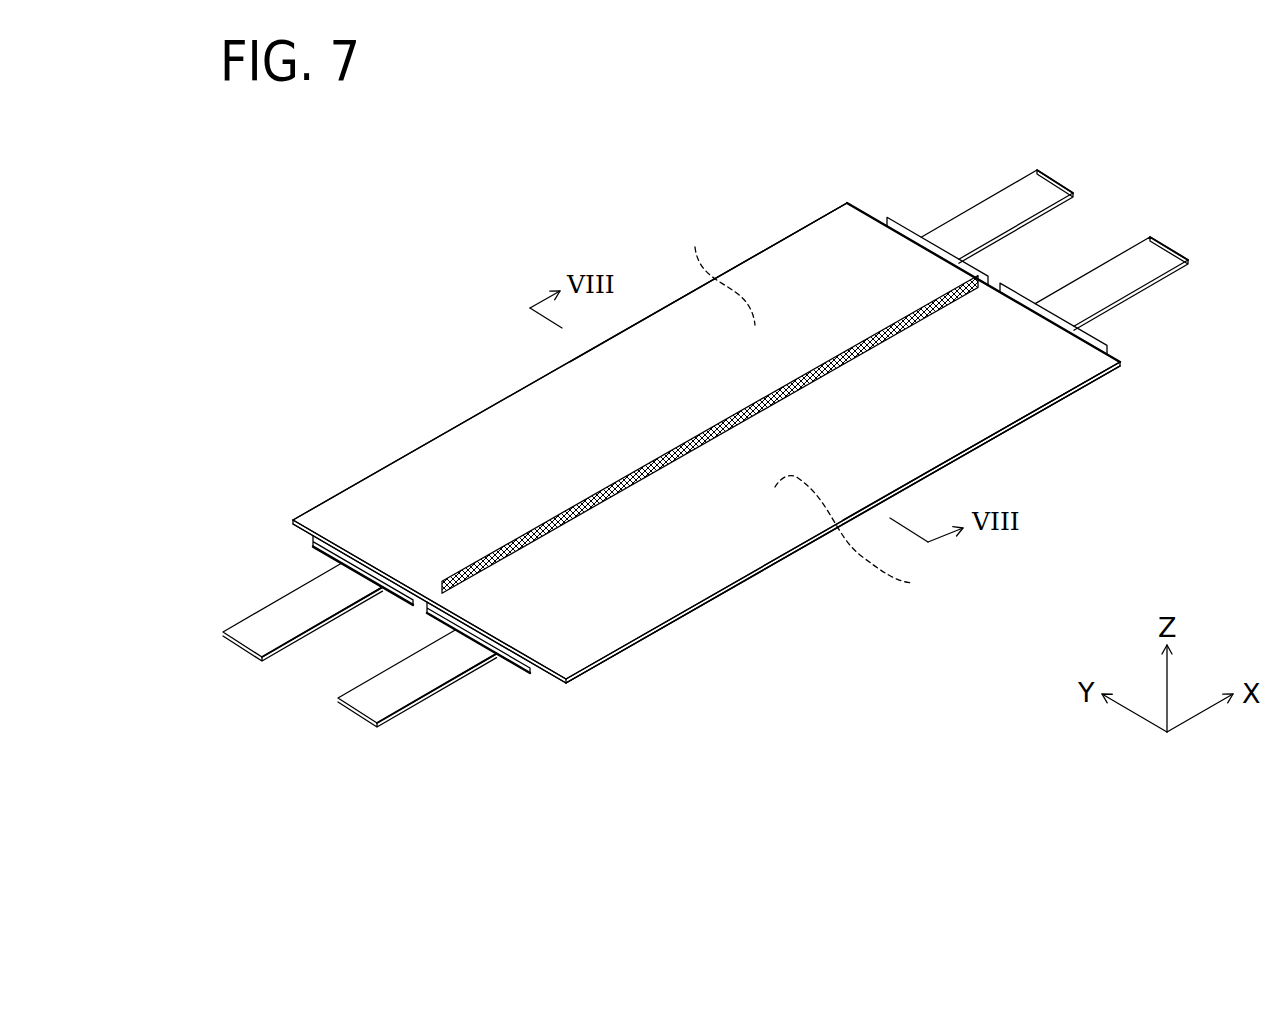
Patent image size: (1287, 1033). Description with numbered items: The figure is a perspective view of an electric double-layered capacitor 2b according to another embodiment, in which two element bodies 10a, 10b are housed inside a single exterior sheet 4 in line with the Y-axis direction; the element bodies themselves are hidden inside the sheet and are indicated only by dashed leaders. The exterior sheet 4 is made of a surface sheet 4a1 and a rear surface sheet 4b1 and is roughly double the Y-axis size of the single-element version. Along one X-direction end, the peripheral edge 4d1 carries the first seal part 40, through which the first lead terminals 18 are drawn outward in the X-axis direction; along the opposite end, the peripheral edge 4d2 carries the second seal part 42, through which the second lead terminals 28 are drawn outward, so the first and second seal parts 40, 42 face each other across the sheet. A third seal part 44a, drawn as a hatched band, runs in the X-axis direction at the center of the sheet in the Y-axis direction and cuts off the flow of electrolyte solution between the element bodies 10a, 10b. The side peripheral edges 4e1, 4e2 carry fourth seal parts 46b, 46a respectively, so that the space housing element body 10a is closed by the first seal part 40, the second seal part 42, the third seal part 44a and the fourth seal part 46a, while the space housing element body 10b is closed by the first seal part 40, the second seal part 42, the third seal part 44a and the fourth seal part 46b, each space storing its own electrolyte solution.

The electric double-layered capacitor 2b is at (760, 242).
The exterior sheet 4 is at (972, 402).
The surface sheet 4a1 is at (657, 572).
The rear surface sheet 4b1 is at (807, 547).
The peripheral edge at first seal part side 4d1 is at (550, 673).
The peripheral edge at second seal part side 4d2 is at (1117, 350).
The side peripheral edge 4e1 is at (443, 433).
The side peripheral edge 4e2 is at (640, 645).
The element body 10a is at (874, 537).
The element body 10b is at (717, 272).
The first lead terminal 18 is at (282, 617).
The second lead terminal 28 is at (1002, 203).
The first seal part 40 is at (393, 598).
The second seal part 42 is at (903, 223).
The third seal part 44a is at (603, 495).
The fourth seal part 46a is at (972, 452).
The fourth seal part 46b is at (677, 325).